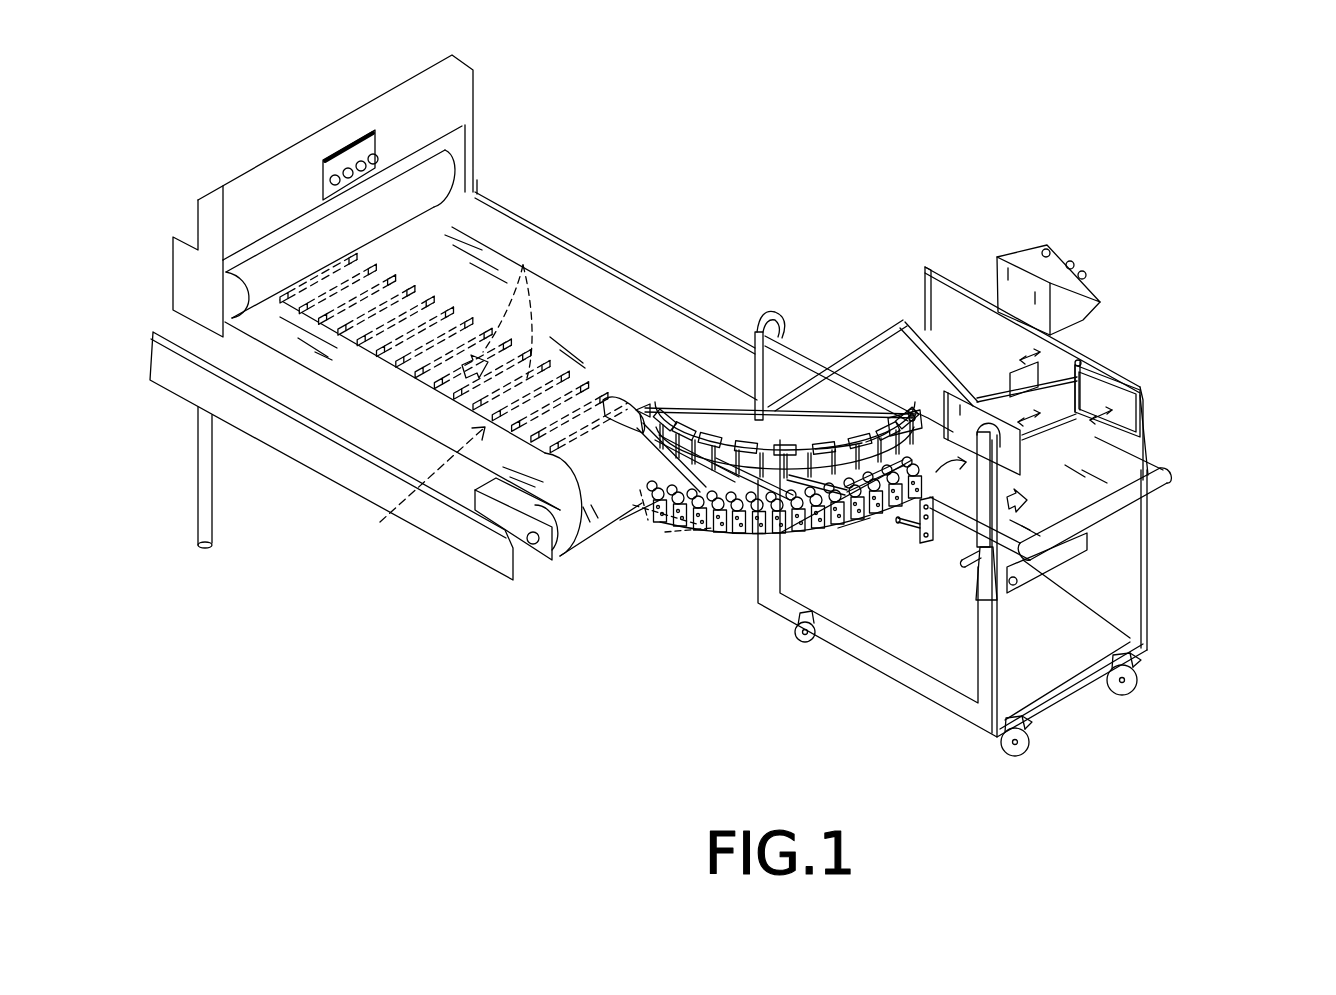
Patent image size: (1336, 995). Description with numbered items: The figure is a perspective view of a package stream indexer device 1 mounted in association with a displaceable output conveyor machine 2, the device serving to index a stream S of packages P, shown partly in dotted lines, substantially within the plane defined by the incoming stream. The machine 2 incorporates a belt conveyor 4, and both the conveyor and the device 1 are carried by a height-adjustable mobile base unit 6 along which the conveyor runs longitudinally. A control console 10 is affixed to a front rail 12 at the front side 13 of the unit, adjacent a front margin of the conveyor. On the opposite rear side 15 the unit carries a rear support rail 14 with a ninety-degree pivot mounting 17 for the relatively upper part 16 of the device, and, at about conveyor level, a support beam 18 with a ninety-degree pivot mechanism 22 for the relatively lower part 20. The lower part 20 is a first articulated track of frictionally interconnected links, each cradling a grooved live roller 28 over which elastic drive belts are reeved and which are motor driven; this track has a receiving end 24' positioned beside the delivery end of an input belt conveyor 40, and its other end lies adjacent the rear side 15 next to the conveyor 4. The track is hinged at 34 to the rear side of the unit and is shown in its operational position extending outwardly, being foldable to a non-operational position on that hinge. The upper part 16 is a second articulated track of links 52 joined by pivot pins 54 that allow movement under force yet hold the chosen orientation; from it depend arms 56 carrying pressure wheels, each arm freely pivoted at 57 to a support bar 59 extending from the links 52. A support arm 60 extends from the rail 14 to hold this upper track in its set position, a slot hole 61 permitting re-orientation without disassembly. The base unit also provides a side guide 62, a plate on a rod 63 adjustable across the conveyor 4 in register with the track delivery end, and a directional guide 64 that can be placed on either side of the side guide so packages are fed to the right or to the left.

The package stream indexer device 1 is at (675, 620).
The displaceable output conveyor machine 2 is at (1150, 330).
The belt conveyor 4 is at (890, 340).
The mobile base unit 6 is at (923, 687).
The control console 10 is at (1027, 247).
The front rail 12 is at (1137, 380).
The front side 13 is at (1183, 472).
The rear support rail 14 is at (793, 350).
The rear side 15 is at (992, 650).
The relatively upper part 16 is at (733, 417).
The 90° pivot mounting 17 is at (773, 312).
The support beam 18 is at (957, 540).
The relatively lower part 20 is at (747, 555).
The 90° pivot mechanism 22 is at (922, 540).
The receiving end 24' is at (670, 548).
The grooved live roller 28 is at (842, 525).
The hinge 34 is at (907, 527).
The input belt conveyor 40 is at (532, 578).
The links 52 is at (832, 422).
The pivot pins 54 is at (862, 417).
The arms 56 is at (637, 437).
The pivot 57 is at (613, 417).
The support bars 59 is at (643, 417).
The support arm 60 is at (710, 412).
The slot hole 61 is at (650, 417).
The side guide 62 is at (947, 398).
The rod 63 is at (1108, 365).
The directional guide 64 is at (1022, 363).
The packages P is at (507, 302).
The stream S is at (423, 490).